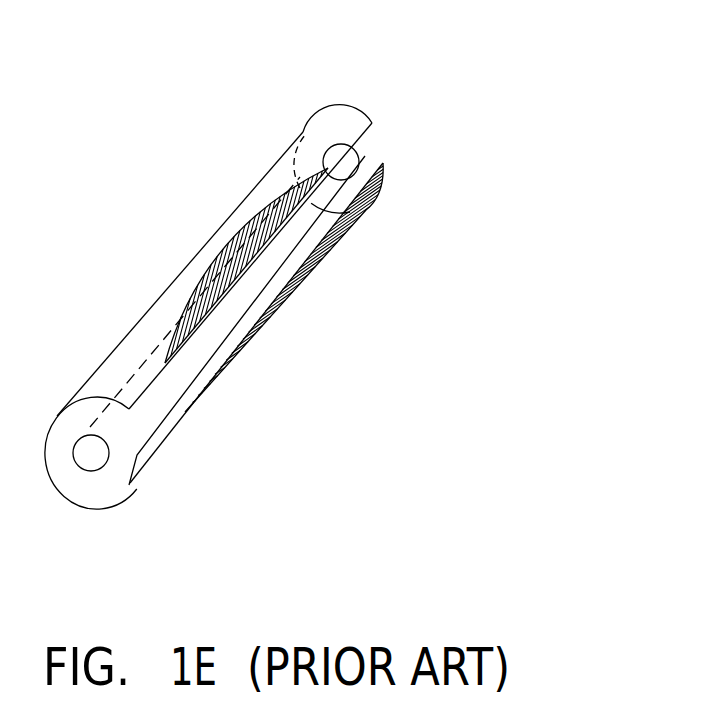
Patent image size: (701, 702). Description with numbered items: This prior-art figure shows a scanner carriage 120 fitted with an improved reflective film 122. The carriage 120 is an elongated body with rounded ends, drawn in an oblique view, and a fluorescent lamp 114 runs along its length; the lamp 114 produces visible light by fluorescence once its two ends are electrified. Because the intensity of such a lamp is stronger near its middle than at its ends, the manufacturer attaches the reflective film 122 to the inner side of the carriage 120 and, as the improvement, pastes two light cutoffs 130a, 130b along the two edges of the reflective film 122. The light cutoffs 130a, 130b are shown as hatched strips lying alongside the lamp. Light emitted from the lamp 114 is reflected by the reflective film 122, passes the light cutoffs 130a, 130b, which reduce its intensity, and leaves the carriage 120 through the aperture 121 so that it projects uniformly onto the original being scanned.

The fluorescent lamp 114 is at (90, 452).
The carriage 120 is at (253, 180).
The aperture 121 is at (376, 147).
The reflective film 122 is at (102, 483).
The light cutoff 130a is at (232, 262).
The light cutoff 130b is at (268, 318).